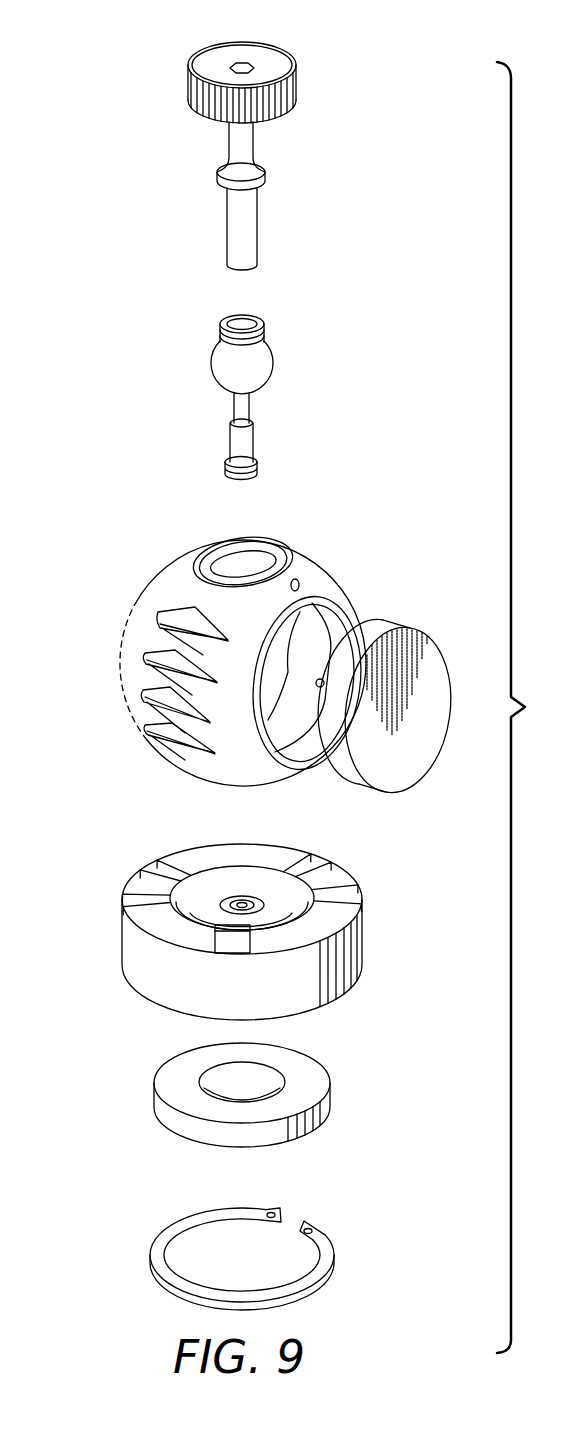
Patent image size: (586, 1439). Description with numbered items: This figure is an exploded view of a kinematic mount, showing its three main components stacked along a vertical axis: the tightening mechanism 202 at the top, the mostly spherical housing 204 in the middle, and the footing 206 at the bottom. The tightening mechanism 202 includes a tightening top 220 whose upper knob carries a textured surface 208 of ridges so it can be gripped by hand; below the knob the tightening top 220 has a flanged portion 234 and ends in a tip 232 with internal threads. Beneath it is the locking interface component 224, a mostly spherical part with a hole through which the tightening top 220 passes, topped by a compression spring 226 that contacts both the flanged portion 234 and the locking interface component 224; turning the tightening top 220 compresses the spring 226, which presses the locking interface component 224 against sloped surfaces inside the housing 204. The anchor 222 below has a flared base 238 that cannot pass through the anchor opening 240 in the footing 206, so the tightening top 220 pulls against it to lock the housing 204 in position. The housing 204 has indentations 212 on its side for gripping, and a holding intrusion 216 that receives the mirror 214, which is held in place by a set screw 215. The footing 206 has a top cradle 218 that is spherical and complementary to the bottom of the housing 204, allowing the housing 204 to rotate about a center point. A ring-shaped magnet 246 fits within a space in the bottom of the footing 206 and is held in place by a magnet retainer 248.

The tightening mechanism 202 is at (296, 41).
The housing 204 is at (223, 653).
The footing 206 is at (218, 933).
The textured surface 208 is at (198, 62).
The indentations 212 is at (147, 730).
The mirror 214 is at (400, 777).
The set screw 215 is at (299, 576).
The holding intrusion 216 is at (312, 626).
The cradle 218 is at (312, 868).
The tightening top 220 is at (222, 52).
The anchor 222 is at (243, 393).
The locking interface component 224 is at (270, 365).
The spring 226 is at (222, 330).
The tip 232 is at (243, 196).
The flanged portion 234 is at (257, 166).
The flared base 238 is at (258, 468).
The anchor opening 240 is at (237, 903).
The ring-shaped magnet 246 is at (330, 1098).
The magnet retainer 248 is at (333, 1258).